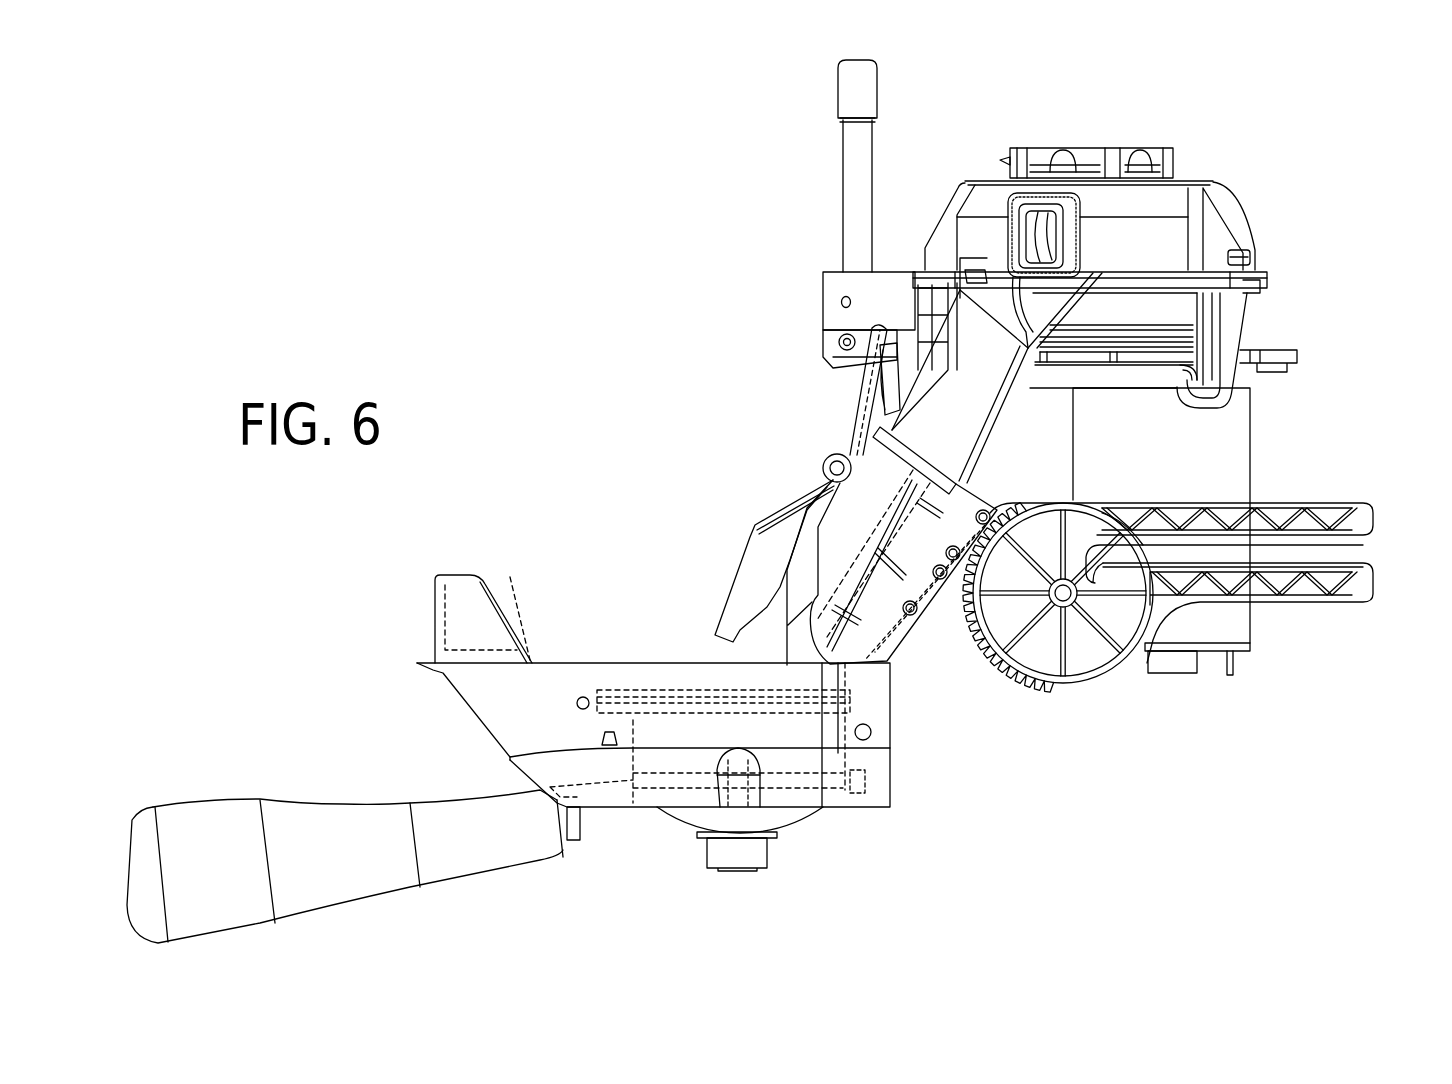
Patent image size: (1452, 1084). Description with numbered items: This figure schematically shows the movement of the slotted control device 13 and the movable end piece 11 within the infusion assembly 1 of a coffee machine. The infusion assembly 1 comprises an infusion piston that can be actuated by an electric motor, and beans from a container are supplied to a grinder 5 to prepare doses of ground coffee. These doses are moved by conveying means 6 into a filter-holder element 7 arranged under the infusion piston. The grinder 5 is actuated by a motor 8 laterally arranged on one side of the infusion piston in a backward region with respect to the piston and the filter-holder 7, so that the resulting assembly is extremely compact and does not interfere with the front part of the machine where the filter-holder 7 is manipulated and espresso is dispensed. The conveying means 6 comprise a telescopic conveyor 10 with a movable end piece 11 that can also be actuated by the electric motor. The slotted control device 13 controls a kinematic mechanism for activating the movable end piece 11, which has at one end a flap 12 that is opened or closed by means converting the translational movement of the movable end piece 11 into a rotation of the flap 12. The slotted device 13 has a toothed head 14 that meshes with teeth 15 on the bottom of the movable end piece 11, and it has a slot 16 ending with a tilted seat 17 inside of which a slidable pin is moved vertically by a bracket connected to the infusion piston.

The infusion assembly 1 is at (1337, 140).
The second grinder 5 is at (1137, 217).
The conveying means 6 is at (723, 348).
The filter-holder element 7 is at (682, 720).
The first motor 8 is at (1232, 423).
The telescopic conveyor 10 is at (987, 425).
The movable end piece 11 is at (853, 540).
The flap 12 is at (750, 567).
The slotted control device 13 is at (1343, 600).
The toothed head 14 is at (1013, 683).
The teeth 15 is at (898, 650).
The slot 16 is at (1303, 553).
The tilted seat 17 is at (1093, 562).